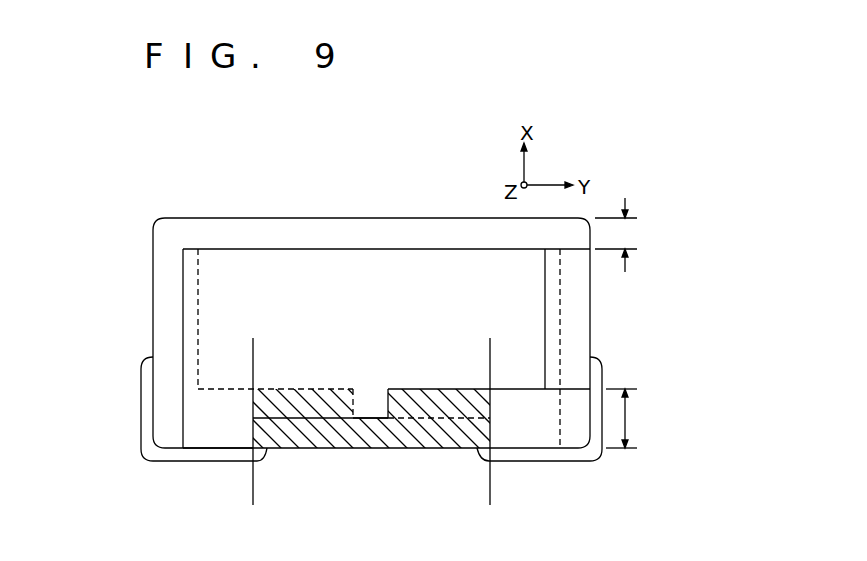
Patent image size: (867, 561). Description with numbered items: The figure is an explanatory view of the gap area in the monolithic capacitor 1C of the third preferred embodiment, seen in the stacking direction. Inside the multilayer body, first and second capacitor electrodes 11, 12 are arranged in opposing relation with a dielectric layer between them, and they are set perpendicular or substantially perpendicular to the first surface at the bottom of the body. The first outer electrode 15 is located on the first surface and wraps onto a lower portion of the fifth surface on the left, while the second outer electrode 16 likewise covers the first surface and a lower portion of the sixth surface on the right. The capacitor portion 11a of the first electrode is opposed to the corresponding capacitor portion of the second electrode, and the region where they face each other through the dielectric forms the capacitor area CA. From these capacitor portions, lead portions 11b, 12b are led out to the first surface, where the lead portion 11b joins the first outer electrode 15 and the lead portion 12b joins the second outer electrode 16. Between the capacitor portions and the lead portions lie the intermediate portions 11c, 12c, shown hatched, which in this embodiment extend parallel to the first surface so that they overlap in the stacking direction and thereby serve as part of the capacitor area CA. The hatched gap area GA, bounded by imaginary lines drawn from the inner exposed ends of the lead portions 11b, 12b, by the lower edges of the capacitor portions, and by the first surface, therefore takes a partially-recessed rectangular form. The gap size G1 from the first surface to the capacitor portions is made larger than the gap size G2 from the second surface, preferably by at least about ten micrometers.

The monolithic capacitor 1C is at (373, 338).
The first capacitor electrode 11 is at (361, 352).
The second capacitor electrode 12 is at (381, 352).
The capacitor portion 11a is at (386, 209).
The lead portion 11b is at (215, 440).
The lead portion 12b is at (560, 433).
The intermediate portion 11c is at (305, 425).
The intermediate portion 12c is at (428, 420).
The first outer electrode 15 is at (148, 423).
The second outer electrode 16 is at (605, 372).
The capacitor area CA is at (386, 348).
The gap area GA is at (377, 434).
The gap size G1 is at (641, 418).
The gap size G2 is at (631, 235).